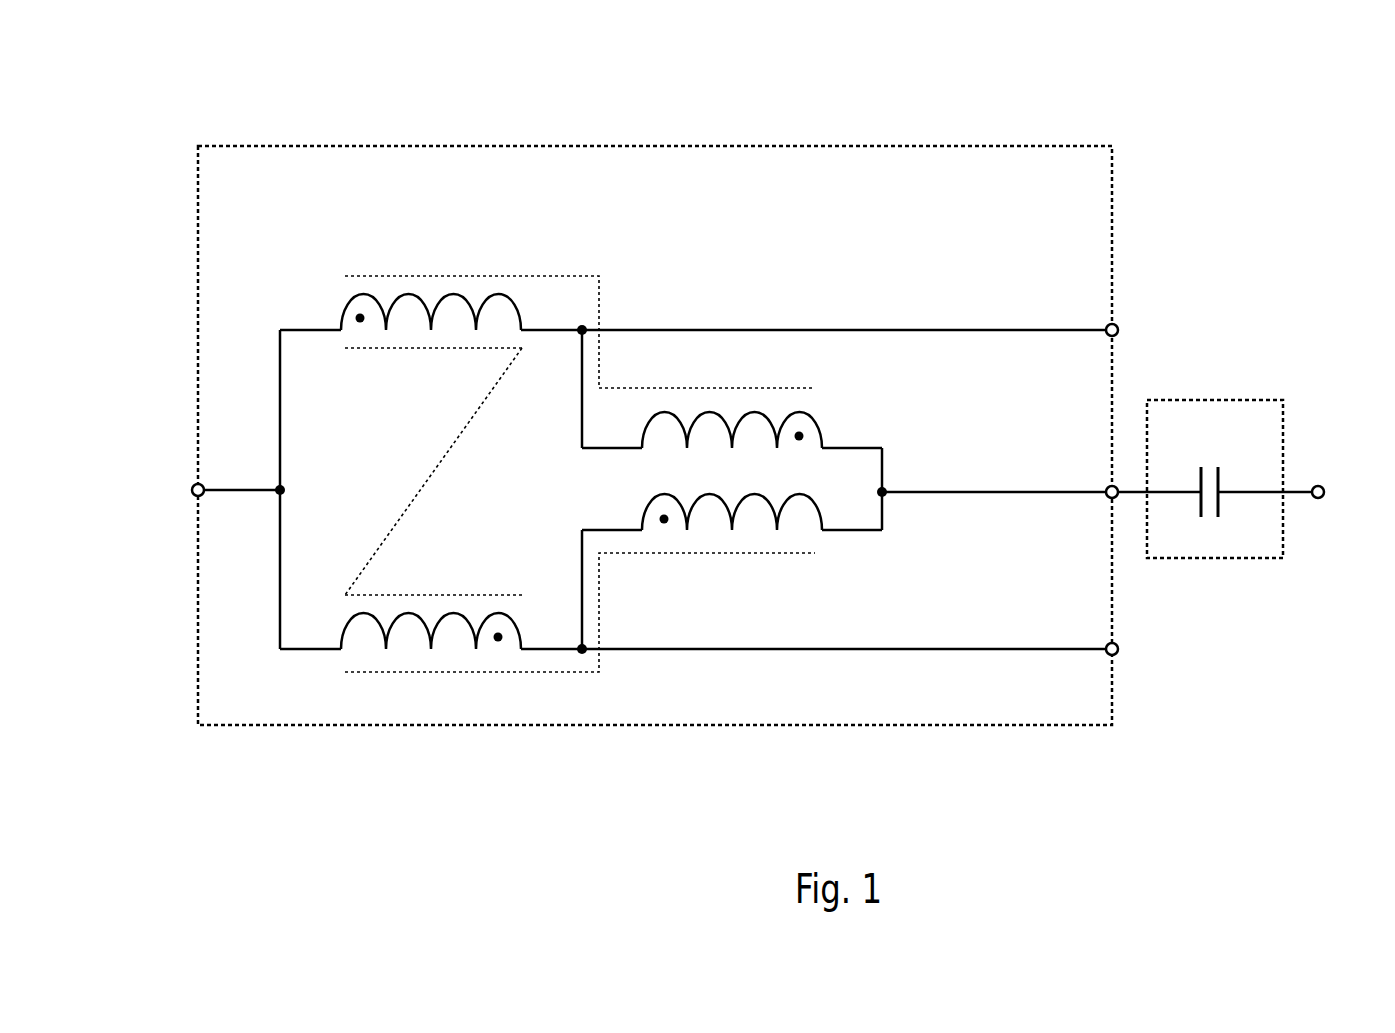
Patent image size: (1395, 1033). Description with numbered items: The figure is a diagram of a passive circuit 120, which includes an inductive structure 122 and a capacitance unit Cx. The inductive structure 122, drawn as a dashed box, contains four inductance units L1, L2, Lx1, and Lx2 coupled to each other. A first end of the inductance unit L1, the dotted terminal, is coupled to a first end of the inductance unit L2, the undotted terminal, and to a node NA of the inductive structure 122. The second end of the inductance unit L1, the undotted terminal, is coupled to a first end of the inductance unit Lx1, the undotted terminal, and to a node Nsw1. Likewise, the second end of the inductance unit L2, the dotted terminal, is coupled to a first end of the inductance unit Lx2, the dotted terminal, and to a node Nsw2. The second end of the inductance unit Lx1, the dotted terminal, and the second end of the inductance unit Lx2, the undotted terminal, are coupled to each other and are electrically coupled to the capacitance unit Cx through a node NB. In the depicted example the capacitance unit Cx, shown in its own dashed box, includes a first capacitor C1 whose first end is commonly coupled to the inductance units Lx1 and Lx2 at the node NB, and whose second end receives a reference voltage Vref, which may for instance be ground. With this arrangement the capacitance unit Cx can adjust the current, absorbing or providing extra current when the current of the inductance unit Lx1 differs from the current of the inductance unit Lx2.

The passive circuit 120 is at (93, 36).
The inductive structure 122 is at (603, 145).
The inductance unit L1 is at (521, 318).
The inductance unit L2 is at (530, 650).
The inductance unit Lx1 is at (725, 416).
The inductance unit Lx2 is at (842, 531).
The node NA is at (192, 495).
The node Nsw1 is at (1103, 335).
The node NB is at (1103, 497).
The node Nsw2 is at (1103, 653).
The first capacitor C1 is at (1215, 476).
The capacitance unit Cx is at (1220, 509).
The reference voltage Vref is at (1349, 491).